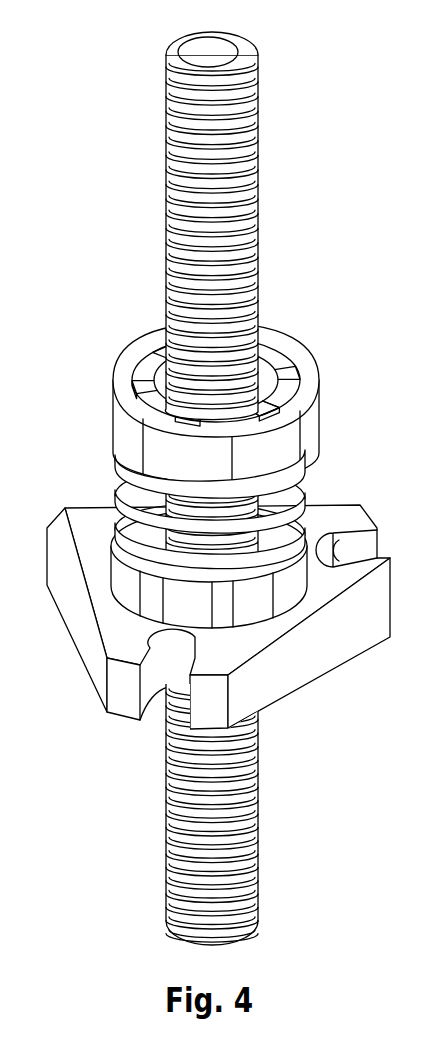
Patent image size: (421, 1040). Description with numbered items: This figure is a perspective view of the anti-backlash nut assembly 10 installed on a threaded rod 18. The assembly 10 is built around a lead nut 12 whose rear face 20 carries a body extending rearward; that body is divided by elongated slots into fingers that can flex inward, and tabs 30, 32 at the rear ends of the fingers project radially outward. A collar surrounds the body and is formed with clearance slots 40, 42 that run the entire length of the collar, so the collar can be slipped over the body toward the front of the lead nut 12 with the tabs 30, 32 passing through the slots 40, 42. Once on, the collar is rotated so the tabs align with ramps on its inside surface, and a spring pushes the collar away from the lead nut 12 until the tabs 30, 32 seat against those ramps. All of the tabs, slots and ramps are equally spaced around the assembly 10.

The nut assembly 10 is at (208, 488).
The lead nut 12 is at (47, 545).
The threaded rod 18 is at (166, 167).
The rear face 20 is at (86, 534).
The tab 30 is at (140, 380).
The tab 32 is at (265, 402).
The clearance slot 40 is at (132, 390).
The clearance slot 42 is at (284, 352).